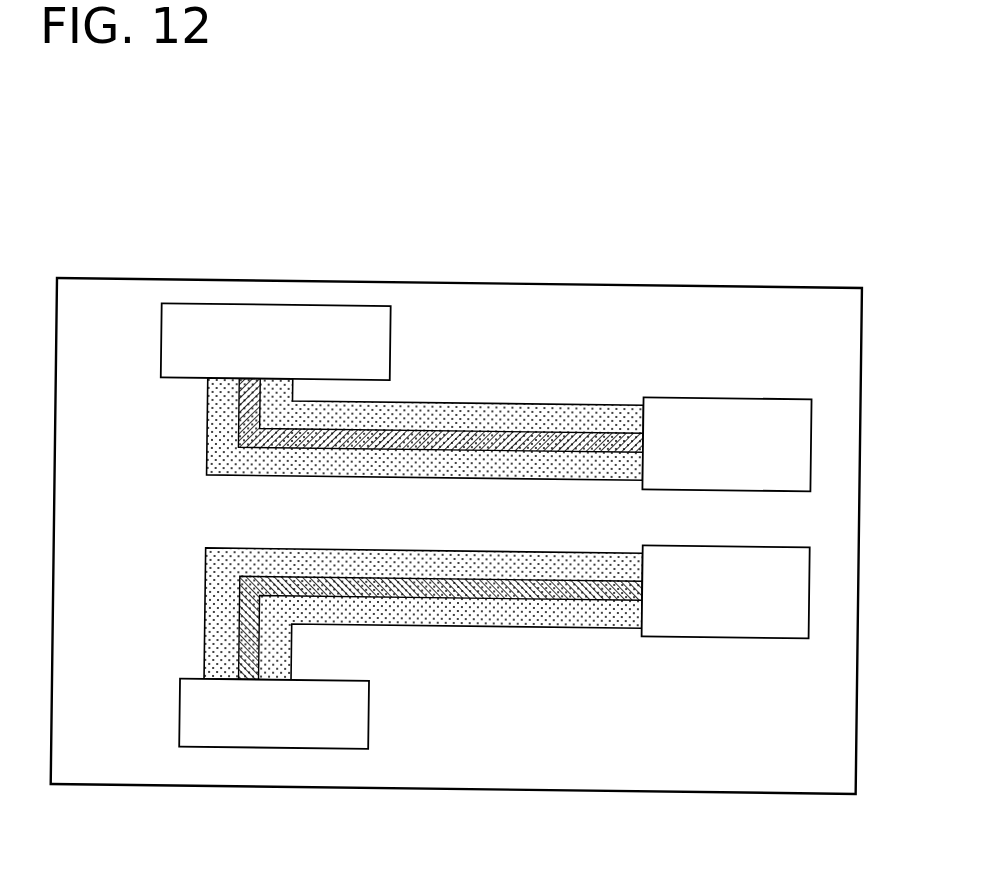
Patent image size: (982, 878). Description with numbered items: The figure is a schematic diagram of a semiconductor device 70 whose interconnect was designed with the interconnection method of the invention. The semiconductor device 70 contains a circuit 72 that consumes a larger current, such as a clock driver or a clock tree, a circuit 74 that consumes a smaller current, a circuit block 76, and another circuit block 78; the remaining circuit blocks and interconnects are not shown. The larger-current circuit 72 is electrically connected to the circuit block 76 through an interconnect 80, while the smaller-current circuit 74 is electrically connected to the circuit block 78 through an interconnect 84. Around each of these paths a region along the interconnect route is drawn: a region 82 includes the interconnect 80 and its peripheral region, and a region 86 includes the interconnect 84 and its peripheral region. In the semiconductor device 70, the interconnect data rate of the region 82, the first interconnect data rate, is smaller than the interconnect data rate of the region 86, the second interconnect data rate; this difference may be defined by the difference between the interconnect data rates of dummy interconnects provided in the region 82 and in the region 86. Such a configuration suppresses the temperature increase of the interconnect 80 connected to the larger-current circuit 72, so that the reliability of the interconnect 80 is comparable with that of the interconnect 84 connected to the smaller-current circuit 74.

The semiconductor device 70 is at (775, 277).
The circuit that consumes a larger current 72 is at (709, 389).
The circuit that consumes a smaller current 74 is at (701, 632).
The circuit block 76 is at (184, 380).
The circuit block 78 is at (374, 714).
The interconnect 80 is at (372, 428).
The region along the interconnect route 82 is at (464, 417).
The interconnect 84 is at (359, 574).
The region along the interconnect route 86 is at (496, 560).